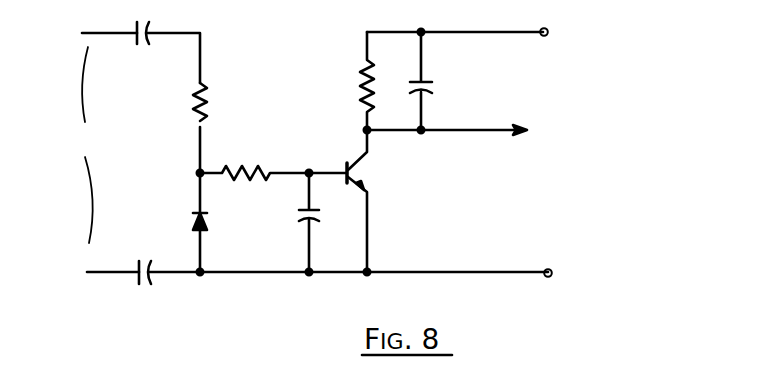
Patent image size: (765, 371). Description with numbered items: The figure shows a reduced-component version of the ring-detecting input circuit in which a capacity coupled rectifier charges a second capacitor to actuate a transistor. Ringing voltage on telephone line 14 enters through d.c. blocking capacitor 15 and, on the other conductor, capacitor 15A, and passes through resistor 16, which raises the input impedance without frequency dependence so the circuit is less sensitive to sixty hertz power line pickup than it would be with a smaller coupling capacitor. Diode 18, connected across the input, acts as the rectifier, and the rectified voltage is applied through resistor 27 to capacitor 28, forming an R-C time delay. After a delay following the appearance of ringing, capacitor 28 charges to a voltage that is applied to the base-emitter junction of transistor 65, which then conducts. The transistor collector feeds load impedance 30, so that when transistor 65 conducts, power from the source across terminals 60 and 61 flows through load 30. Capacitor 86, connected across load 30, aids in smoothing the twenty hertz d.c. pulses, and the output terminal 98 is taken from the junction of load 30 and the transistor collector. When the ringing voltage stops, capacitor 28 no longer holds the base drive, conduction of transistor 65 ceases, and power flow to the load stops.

The telephone line 14 is at (80, 145).
The d.c. blocking capacitor 15 is at (158, 8).
The capacitor 15A is at (134, 262).
The resistor 16 is at (190, 110).
The diode 18 is at (207, 236).
The resistor 27 is at (268, 165).
The capacitor 28 is at (303, 231).
The load impedance 30 is at (357, 99).
The power source terminal 60 is at (549, 23).
The power source terminal 61 is at (545, 262).
The transistor 65 is at (343, 165).
The capacitor 86 is at (430, 104).
The output terminal 98 is at (520, 133).